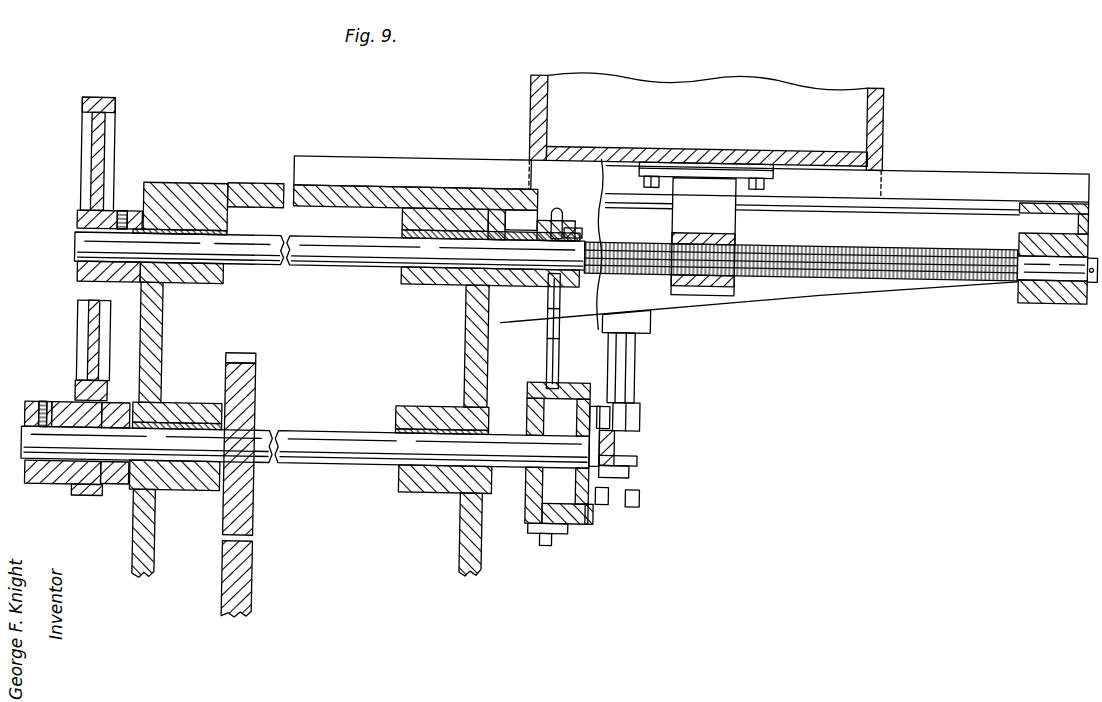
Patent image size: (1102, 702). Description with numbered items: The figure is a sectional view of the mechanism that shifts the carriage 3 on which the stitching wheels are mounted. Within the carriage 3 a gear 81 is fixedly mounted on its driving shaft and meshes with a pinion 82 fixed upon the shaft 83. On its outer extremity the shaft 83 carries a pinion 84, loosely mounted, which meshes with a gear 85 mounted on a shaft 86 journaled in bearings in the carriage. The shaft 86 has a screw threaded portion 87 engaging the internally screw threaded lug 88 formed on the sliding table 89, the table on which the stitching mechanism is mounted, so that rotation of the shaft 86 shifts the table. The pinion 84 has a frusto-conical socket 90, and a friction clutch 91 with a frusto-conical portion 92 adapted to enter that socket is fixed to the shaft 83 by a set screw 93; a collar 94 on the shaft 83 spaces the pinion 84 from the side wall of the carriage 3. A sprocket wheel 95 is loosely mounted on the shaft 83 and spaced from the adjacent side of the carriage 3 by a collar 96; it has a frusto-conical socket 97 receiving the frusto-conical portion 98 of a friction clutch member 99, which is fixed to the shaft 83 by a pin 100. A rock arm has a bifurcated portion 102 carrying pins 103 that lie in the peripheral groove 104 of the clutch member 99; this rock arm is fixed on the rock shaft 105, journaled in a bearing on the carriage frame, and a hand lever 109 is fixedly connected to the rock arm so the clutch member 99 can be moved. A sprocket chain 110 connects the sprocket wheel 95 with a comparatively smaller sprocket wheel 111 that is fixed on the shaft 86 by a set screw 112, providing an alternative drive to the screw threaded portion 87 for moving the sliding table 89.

The carriage 3 is at (474, 536).
The gear 81 is at (256, 581).
The pinion 82 is at (250, 513).
The shaft 83 is at (359, 460).
The pinion 84 is at (95, 496).
The gear 85 is at (100, 140).
The shaft 86 is at (351, 245).
The screw threaded portion 87 is at (892, 260).
The internally screw threaded lug 88 is at (701, 284).
The sliding table 89 is at (875, 103).
The frusto-conical socket 90 is at (82, 400).
The friction clutch 91 is at (33, 406).
The frusto-conical portion 92 is at (75, 491).
The set screw 93 is at (47, 403).
The collar 94 is at (120, 402).
The sprocket wheel 95 is at (547, 525).
The collar 96 is at (516, 482).
The frusto-conical socket 97 is at (571, 521).
The frusto-conical portion 98 is at (602, 512).
The friction clutch member 99 is at (634, 469).
The pin 100 is at (605, 397).
The bifurcated portion 102 is at (638, 400).
The pins 103 is at (643, 408).
The peripheral groove 104 is at (623, 430).
The rock shaft 105 is at (636, 350).
The hand lever 109 is at (644, 446).
The sprocket chain 110 is at (552, 332).
The sprocket wheel 111 is at (547, 201).
The set screw 112 is at (573, 218).